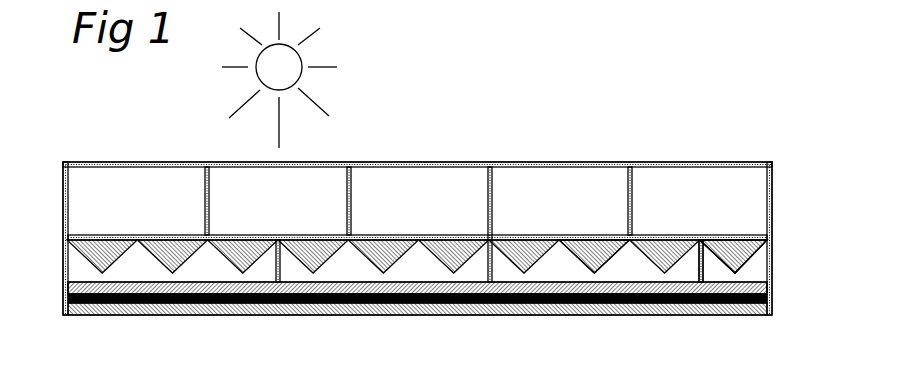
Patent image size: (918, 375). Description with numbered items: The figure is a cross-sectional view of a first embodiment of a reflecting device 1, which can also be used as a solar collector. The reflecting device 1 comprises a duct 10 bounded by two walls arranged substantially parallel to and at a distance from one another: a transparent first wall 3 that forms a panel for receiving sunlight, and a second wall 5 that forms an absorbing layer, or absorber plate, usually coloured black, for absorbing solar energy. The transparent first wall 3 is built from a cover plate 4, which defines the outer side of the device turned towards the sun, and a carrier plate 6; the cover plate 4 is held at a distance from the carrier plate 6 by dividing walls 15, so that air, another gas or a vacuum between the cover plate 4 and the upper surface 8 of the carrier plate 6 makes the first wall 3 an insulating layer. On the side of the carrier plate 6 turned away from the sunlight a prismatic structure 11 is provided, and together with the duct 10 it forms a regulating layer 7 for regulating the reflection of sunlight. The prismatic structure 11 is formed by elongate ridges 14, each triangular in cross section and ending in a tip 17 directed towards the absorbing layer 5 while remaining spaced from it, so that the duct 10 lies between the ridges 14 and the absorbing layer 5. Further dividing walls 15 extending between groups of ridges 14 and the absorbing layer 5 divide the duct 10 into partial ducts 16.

The reflecting device 1 is at (605, 160).
The first wall 3 is at (58, 182).
The cover plate 4 is at (410, 163).
The second wall 5 is at (297, 306).
The carrier plate 6 is at (63, 292).
The regulating layer 7 is at (58, 247).
The upper surface 8 is at (722, 236).
The duct 10 is at (82, 275).
The prismatic structure 11 is at (764, 266).
The ridges 14 is at (598, 252).
The dividing walls 15 is at (206, 190).
The partial ducts 16 is at (162, 275).
The tip 17 is at (242, 275).